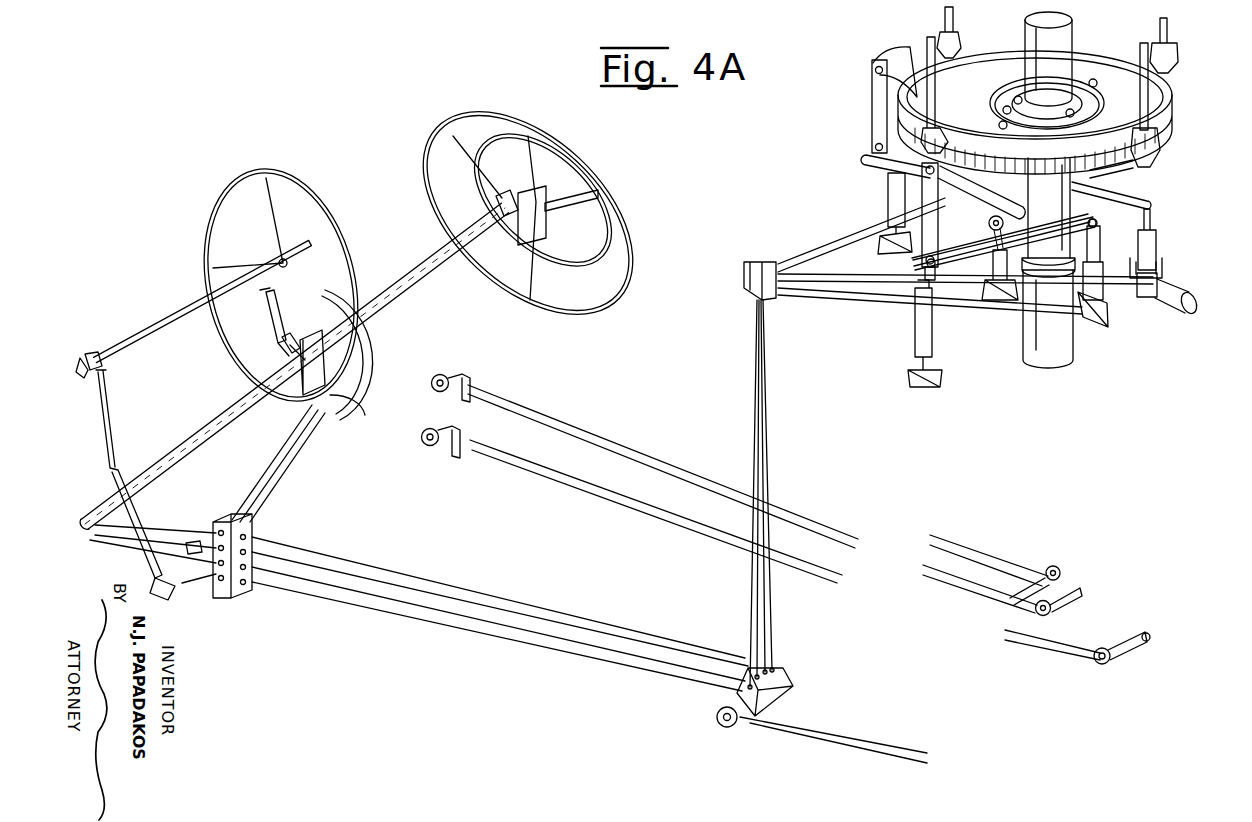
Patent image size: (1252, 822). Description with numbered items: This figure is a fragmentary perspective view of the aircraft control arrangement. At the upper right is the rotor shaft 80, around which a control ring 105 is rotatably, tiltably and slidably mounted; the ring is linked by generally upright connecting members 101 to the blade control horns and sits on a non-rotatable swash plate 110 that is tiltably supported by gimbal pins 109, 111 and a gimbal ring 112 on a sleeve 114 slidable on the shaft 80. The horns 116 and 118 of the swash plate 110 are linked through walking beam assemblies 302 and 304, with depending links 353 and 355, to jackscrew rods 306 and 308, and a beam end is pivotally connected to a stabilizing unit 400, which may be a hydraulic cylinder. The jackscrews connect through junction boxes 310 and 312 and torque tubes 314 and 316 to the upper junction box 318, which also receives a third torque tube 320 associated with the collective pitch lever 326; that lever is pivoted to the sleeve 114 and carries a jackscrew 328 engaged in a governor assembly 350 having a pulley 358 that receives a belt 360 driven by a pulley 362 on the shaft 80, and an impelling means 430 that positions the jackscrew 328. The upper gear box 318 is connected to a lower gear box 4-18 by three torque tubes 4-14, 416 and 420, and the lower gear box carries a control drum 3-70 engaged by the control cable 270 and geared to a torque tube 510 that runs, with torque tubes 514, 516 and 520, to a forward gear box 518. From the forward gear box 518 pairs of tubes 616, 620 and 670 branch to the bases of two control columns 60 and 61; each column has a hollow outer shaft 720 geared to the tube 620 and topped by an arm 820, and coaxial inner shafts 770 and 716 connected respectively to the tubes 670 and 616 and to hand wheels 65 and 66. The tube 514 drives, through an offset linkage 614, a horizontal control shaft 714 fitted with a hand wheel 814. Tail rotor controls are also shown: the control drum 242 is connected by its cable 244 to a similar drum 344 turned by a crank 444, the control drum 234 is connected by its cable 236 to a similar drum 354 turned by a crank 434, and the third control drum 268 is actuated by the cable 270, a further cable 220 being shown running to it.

The hand wheel 814 is at (318, 200).
The control shaft 714 is at (170, 330).
The control shaft 770 is at (287, 345).
The arm 820 is at (265, 331).
The hand wheel 66 is at (365, 310).
The control shaft 716 is at (312, 350).
The external hollow control shaft 720 is at (438, 296).
The control column 61 is at (456, 314).
The hand wheel 65 is at (622, 282).
The control column 60 is at (210, 397).
The intermediate linkage 614 is at (112, 410).
The torque tube 616 is at (120, 545).
The control tube 620 is at (162, 530).
The torque tube 670 is at (196, 540).
The forward gear box 518 is at (235, 586).
The torque tube 510 is at (518, 606).
The torque tube 520 is at (580, 612).
The control tube 514 is at (465, 626).
The torque tube 516 is at (566, 662).
The control drum 344 is at (435, 388).
The crank 444 is at (470, 384).
The pulley 354 is at (430, 447).
The crank 434 is at (472, 446).
The upper junction box 318 is at (757, 262).
The third torque tube 320 is at (805, 252).
The torque tube 314 is at (818, 283).
The torque tube 316 is at (873, 298).
The stabilizing unit 400 is at (888, 194).
The depending link 355 is at (928, 244).
The horn 118 is at (960, 198).
The jackscrew rod 306 is at (983, 221).
The walking beam assembly 304 is at (965, 258).
The junction box 310 is at (1000, 303).
The pulley 362 is at (1062, 266).
The jackscrew rod 308 is at (1100, 246).
The junction box 312 is at (1110, 318).
The shaft 80 is at (1070, 340).
The belt 360 is at (1120, 286).
The pulley 358 is at (1166, 268).
The governor assembly 350 is at (1182, 274).
The impelling means 430 is at (1198, 310).
The jackscrew 328 is at (1158, 224).
The collective pitch lever 326 is at (1149, 198).
The sleeve 114 is at (1105, 170).
The horn 116 is at (906, 64).
The swash plate 110 is at (988, 70).
The gimbal pin 111 is at (995, 96).
The gimbal pin 109 is at (998, 115).
The gimbal ring 112 is at (1090, 103).
The control ring 105 is at (1107, 62).
The connecting member 101 is at (1168, 30).
The depending link 353 is at (871, 108).
The walking beam assembly 302 is at (885, 158).
The torque tube 416 is at (752, 610).
The torque tube 420 is at (772, 595).
The torque tube 4-14 is at (762, 623).
The lower gear box 4-18 is at (788, 672).
The control drum 3-70 is at (717, 722).
The control cable 270 is at (792, 736).
The cable 244 is at (1000, 556).
The control drum 242 is at (1060, 571).
The control cable 236 is at (954, 582).
The control drum 234 is at (1052, 614).
The cable 220 is at (1046, 646).
The third control drum 268 is at (1102, 666).